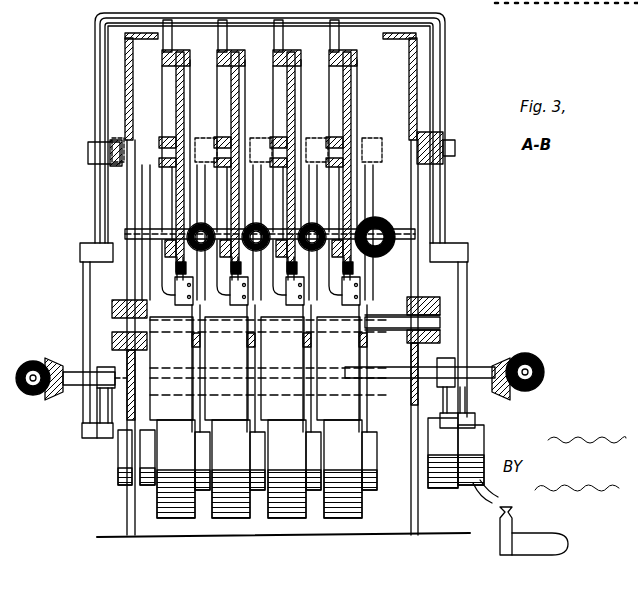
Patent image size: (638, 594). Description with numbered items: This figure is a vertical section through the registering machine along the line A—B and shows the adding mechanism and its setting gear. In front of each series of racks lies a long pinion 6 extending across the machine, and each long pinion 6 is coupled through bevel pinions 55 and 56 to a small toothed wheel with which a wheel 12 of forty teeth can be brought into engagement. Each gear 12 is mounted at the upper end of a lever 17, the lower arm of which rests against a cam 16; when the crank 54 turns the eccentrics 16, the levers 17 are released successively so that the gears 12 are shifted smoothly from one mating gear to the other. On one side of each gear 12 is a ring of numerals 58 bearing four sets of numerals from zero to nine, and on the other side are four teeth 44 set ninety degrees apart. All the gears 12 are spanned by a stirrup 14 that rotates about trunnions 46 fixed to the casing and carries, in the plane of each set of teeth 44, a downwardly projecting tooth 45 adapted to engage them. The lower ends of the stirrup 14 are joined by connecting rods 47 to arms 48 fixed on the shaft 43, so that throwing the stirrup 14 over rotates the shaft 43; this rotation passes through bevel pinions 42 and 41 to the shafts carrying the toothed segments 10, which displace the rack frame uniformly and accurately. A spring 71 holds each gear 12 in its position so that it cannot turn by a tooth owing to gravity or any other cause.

The long pinion 6 is at (402, 241).
The toothed segment 10 is at (462, 10).
The wheel 12 is at (186, 110).
The stirrup 14 is at (446, 82).
The cam 16 is at (155, 498).
The lever 17 is at (259, 274).
The bevel pinion 41 is at (33, 396).
The bevel pinion 42 is at (50, 362).
The shaft 43 is at (75, 370).
The teeth 44 is at (161, 58).
The downwardly projecting tooth 45 is at (176, 38).
The trunnion 46 is at (92, 150).
The connecting rod 47 is at (83, 283).
The arm 48 is at (105, 407).
The crank 54 is at (512, 512).
The bevel pinion 55 is at (240, 215).
The bevel pinion 56 is at (246, 215).
The ring of numerals 58 is at (189, 78).
The spring 71 is at (185, 272).